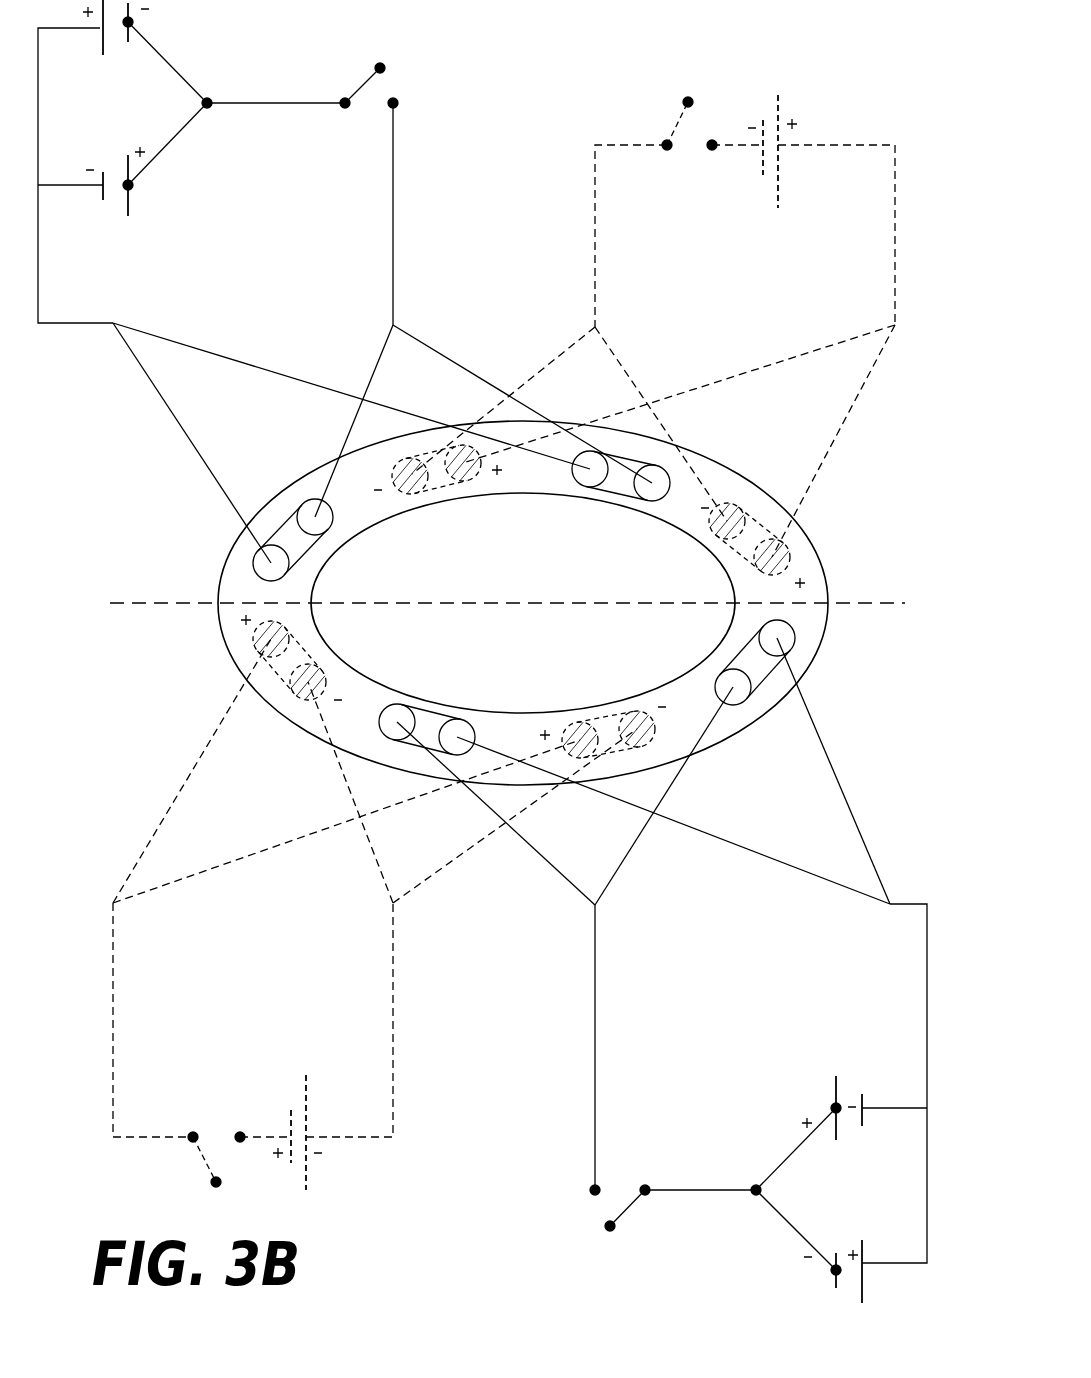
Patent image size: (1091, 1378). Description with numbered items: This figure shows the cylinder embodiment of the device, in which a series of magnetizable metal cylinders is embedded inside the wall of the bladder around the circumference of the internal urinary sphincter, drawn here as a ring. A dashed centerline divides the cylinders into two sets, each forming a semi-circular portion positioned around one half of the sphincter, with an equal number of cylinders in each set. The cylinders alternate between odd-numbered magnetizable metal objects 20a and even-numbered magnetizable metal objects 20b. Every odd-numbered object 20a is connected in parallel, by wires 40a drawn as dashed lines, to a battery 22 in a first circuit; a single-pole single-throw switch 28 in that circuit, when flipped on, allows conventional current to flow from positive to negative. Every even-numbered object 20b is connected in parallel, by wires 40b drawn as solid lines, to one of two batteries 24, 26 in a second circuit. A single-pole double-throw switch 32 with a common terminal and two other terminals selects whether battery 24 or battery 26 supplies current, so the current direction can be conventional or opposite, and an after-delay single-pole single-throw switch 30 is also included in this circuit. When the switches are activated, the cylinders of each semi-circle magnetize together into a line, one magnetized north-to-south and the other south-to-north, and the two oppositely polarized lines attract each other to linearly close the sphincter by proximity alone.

The odd-numbered magnetizable metal object 20a is at (437, 484).
The even-numbered magnetizable metal object 20b is at (297, 547).
The battery 22 is at (777, 93).
The battery 24 is at (100, 195).
The battery 26 is at (100, 40).
The SPST switch 28 is at (673, 125).
The after-delay SPST switch 30 is at (364, 84).
The single-pole, double-throw (SPDT) switch 32 is at (167, 63).
The wires 40a is at (557, 350).
The wires 40b is at (267, 340).